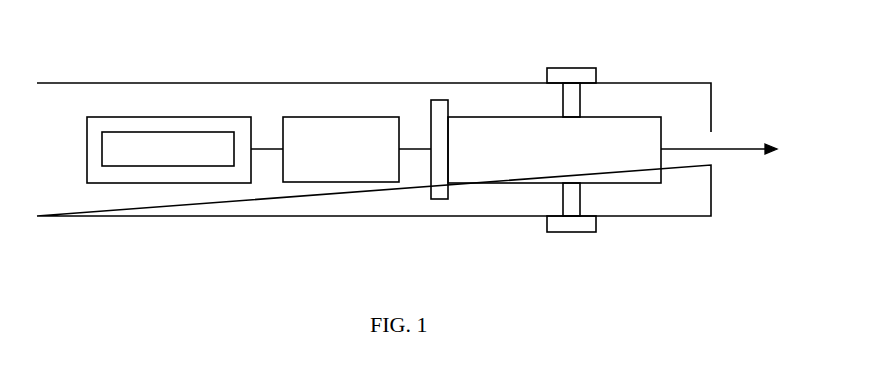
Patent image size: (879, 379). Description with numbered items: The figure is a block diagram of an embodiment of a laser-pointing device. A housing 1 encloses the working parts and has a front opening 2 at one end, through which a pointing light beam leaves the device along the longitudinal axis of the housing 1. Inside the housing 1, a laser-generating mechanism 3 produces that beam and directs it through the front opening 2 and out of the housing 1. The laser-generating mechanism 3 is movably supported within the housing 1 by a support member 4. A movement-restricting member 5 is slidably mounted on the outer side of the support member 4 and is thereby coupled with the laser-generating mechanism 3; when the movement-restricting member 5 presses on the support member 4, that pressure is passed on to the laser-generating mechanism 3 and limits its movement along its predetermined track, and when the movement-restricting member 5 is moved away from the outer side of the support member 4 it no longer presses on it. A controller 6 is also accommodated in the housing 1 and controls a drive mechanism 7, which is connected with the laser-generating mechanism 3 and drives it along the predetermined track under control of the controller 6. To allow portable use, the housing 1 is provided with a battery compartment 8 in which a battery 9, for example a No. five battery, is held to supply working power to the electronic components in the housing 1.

The housing 1 is at (234, 83).
The front opening 2 is at (712, 142).
The laser-generating mechanism 3 is at (623, 145).
The support member 4 is at (580, 100).
The movement-restricting member 5 is at (553, 75).
The controller 6 is at (300, 123).
The drive mechanism 7 is at (436, 108).
The battery compartment 8 is at (103, 123).
The battery 9 is at (123, 149).